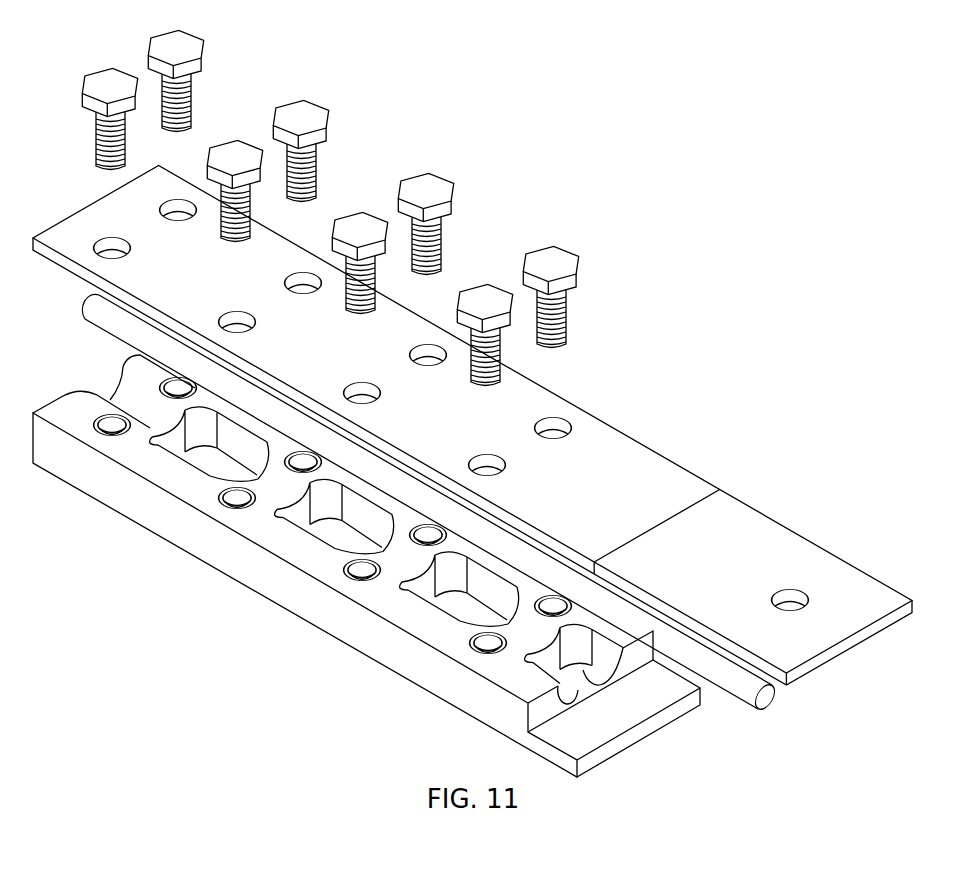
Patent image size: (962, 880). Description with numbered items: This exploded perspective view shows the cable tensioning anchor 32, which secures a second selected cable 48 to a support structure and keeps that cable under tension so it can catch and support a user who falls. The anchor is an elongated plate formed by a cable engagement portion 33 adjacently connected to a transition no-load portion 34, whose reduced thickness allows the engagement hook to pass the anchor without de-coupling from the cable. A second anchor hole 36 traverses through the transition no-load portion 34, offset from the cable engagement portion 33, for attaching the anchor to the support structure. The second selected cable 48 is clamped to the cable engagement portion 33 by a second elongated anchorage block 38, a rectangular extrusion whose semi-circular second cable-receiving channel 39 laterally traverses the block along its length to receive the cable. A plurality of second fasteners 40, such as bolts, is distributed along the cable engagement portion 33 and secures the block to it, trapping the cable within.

The cable tensioning anchor 32 is at (812, 117).
The cable engagement portion 33 is at (648, 458).
The transition no-load portion 34 is at (753, 582).
The second anchor hole 36 is at (795, 597).
The second elongated anchorage block 38 is at (233, 568).
The second cable-receiving channel 39 is at (556, 648).
The plurality of second fasteners 40 is at (93, 86).
The second selected cable 48 is at (747, 693).